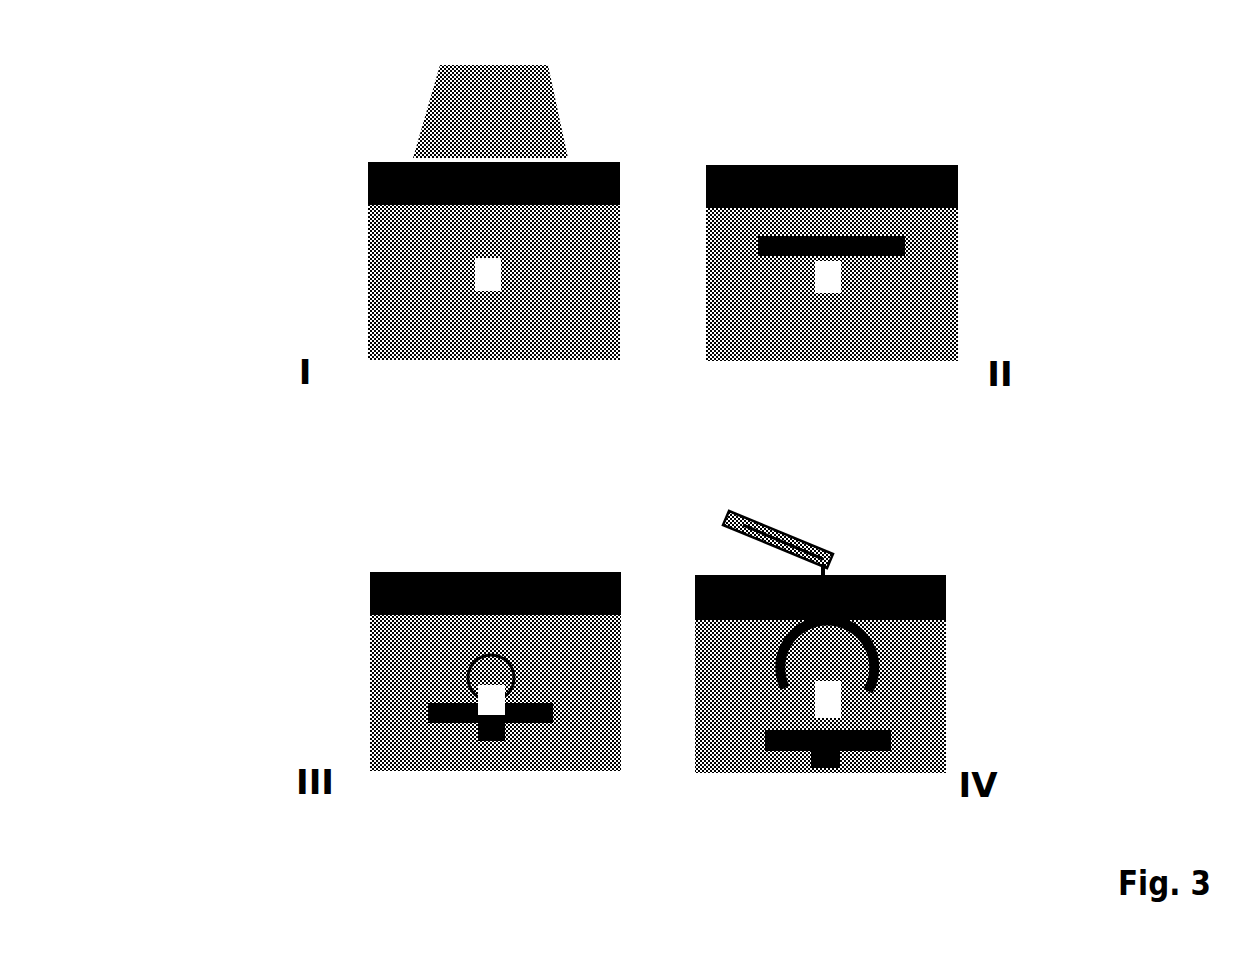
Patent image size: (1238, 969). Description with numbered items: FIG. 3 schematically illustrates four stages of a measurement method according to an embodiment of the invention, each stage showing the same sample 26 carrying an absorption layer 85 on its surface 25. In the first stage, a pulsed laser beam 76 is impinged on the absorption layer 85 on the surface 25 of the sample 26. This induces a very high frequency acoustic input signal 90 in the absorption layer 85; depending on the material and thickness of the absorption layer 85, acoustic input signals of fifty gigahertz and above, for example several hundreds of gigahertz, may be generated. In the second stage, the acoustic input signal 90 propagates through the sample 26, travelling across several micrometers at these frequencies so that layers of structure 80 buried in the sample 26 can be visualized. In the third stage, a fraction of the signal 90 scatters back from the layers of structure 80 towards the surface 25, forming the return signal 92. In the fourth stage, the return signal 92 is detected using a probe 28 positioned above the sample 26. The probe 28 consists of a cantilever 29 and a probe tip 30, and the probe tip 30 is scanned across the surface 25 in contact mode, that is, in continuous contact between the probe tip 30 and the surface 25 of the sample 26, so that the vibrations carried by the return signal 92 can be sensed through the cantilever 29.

The surface 25 is at (380, 155).
The sample 26 is at (368, 248).
The pulsed laser beam 76 is at (546, 90).
The absorption layer 85 is at (614, 172).
The layers of structure 80 is at (480, 280).
The acoustic input signal 90 is at (897, 237).
The return signal 92 is at (462, 665).
The probe 28 is at (762, 505).
The cantilever 29 is at (795, 530).
The probe tip 30 is at (828, 562).